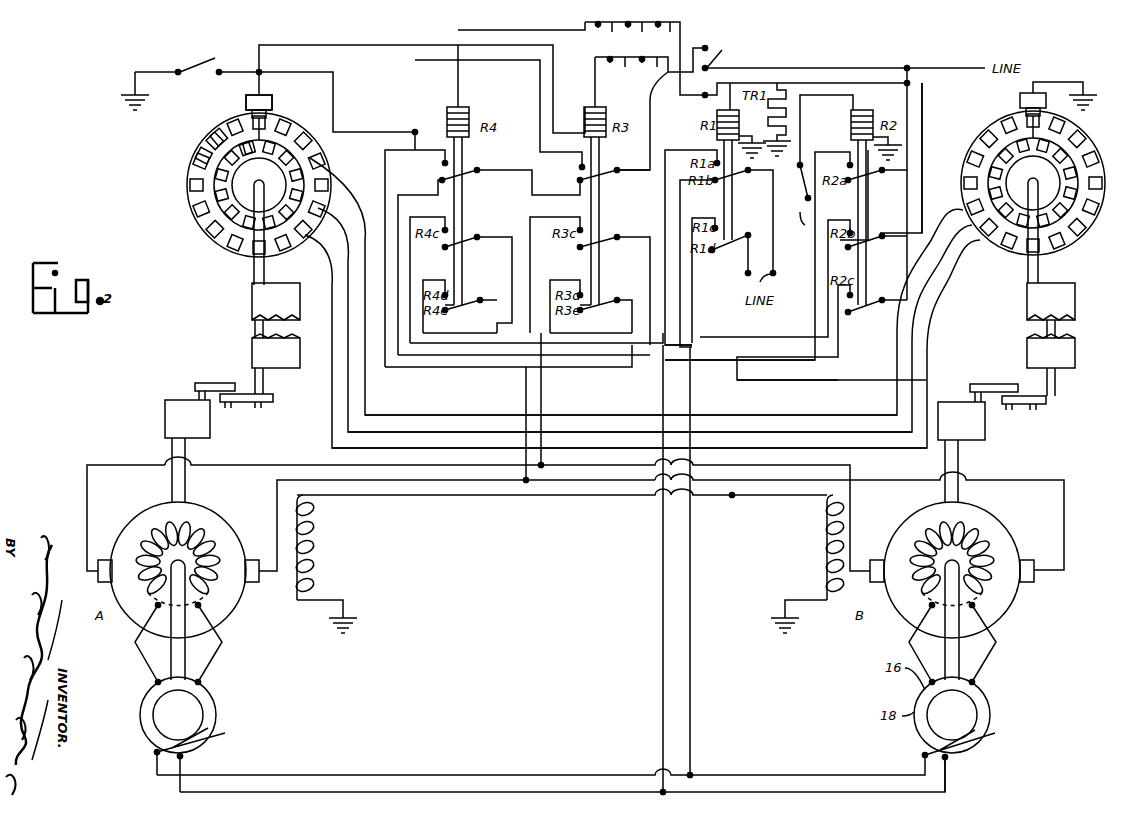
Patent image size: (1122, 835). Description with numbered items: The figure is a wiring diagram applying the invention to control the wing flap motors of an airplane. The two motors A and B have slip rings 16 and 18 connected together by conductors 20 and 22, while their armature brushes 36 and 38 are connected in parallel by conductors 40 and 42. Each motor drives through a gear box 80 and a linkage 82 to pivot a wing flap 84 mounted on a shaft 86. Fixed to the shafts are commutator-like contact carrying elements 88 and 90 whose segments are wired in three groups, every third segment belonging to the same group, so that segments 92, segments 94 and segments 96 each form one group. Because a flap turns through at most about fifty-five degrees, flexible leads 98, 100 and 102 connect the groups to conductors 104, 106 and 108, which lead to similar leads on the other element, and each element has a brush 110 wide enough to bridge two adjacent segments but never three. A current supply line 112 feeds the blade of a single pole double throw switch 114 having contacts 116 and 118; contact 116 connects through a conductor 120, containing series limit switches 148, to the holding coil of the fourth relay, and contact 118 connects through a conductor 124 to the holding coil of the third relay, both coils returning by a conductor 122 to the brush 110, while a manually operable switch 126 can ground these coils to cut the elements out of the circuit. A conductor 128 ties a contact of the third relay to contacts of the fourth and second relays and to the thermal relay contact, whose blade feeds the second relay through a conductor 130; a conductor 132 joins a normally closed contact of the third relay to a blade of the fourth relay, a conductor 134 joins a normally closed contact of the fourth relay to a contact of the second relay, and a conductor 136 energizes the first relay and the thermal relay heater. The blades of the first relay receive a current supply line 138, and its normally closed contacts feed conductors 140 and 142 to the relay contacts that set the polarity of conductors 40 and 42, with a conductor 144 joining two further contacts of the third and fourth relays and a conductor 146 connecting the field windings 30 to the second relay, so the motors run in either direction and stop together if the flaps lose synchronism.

The slip ring 16 is at (205, 690).
The slip ring 18 is at (215, 712).
The conductor 20 is at (478, 775).
The conductor 22 is at (545, 795).
The field winding 30 is at (320, 560).
The armature brush 36 is at (104, 560).
The armature brush 38 is at (252, 560).
The conductor 40 is at (305, 462).
The conductor 42 is at (432, 480).
The gear box 80 is at (165, 425).
The linkage 82 is at (228, 383).
The wing flap 84 is at (283, 365).
The shaft 86 is at (254, 278).
The contact carrying element 88 is at (318, 128).
The contact carrying element 90 is at (1020, 100).
The segments 92 is at (635, 247).
The segments 94 is at (630, 179).
The segments 96 is at (615, 186).
The flexible lead 98 is at (636, 286).
The flexible lead 100 is at (645, 319).
The flexible lead 102 is at (988, 275).
The conductor 104 is at (420, 415).
The conductor 106 is at (462, 432).
The conductor 108 is at (462, 448).
The brush 110 is at (246, 98).
The current supply line 112 is at (822, 68).
The single pole double throw switch 114 is at (718, 52).
The contact 116 is at (702, 87).
The contact 118 is at (706, 46).
The conductor 120 is at (680, 40).
The conductor 122 is at (335, 45).
The conductor 124 is at (652, 100).
The manually operable switch 126 is at (205, 62).
The conductor 128 is at (398, 368).
The conductor 130 is at (850, 97).
The conductor 132 is at (478, 168).
The conductor 134 is at (740, 360).
The conductor 136 is at (922, 100).
The current supply line 138 is at (781, 285).
The conductor 140 is at (591, 325).
The conductor 142 is at (705, 345).
The conductor 144 is at (612, 70).
The conductor 146 is at (745, 418).
The limit switches 148 is at (608, 32).